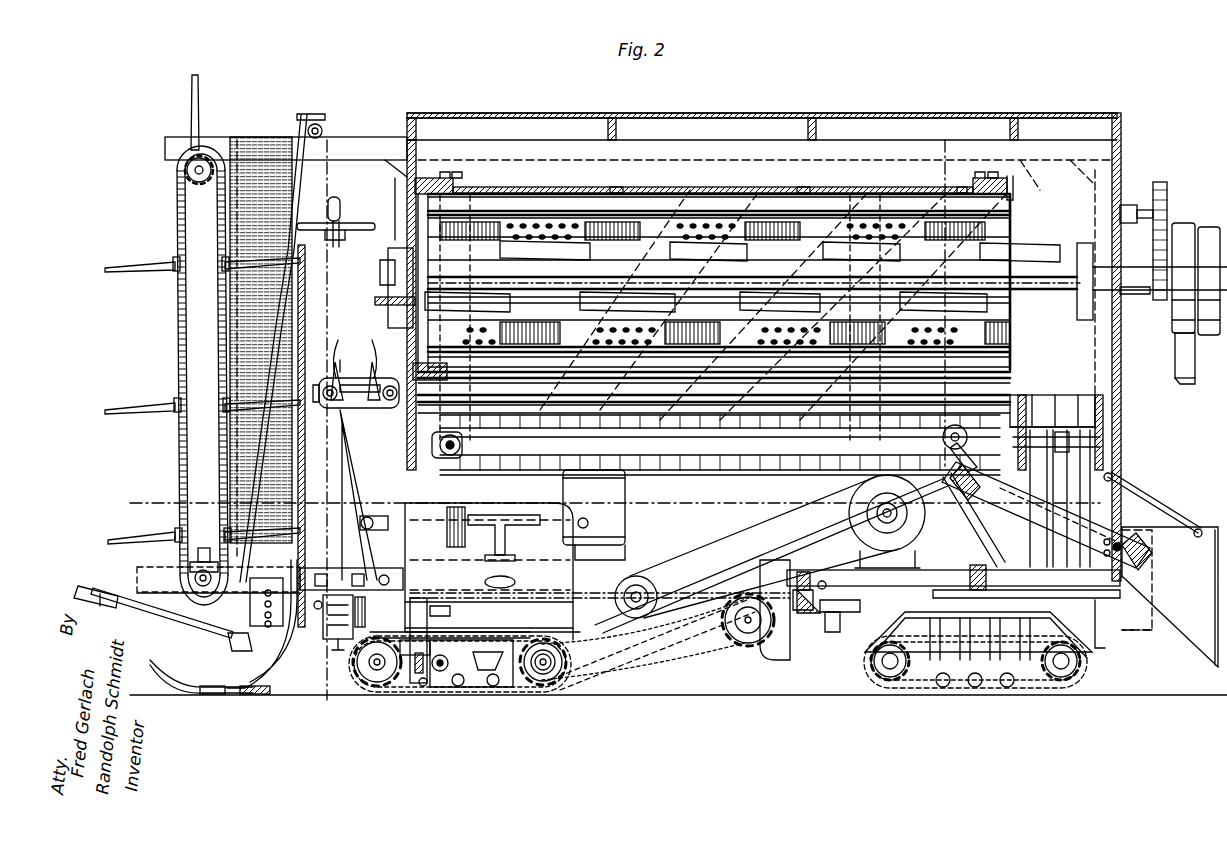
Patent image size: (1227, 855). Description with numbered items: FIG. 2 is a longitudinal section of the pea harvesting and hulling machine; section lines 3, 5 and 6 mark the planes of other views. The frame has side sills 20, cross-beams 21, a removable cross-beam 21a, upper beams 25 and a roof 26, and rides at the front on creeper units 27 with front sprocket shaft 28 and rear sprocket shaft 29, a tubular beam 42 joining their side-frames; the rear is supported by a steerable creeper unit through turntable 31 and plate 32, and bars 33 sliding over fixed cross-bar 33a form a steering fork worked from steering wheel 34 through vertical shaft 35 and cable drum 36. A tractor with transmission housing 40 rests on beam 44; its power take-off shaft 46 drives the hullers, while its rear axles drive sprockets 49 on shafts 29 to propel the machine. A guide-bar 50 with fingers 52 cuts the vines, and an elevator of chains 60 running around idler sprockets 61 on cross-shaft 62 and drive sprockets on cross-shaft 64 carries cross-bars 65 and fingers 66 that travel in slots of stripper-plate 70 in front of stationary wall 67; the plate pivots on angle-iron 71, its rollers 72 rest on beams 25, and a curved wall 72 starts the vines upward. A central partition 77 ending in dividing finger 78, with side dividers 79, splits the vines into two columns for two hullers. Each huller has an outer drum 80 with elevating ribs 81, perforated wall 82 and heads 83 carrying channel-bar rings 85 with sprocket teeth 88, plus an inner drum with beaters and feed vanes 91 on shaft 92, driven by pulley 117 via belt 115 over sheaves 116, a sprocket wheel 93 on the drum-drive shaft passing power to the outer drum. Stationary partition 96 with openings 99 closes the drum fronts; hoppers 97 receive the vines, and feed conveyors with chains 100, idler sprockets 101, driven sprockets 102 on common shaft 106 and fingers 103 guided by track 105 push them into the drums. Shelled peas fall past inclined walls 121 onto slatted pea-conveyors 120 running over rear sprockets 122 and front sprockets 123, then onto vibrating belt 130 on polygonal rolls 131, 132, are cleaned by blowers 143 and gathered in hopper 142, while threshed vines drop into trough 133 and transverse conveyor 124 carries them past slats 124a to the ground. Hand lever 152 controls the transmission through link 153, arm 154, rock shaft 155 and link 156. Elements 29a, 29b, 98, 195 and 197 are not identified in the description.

The section line 3— 3 is at (1156, 640).
The section line 5— 5 is at (343, 752).
The section line 6— 6 is at (826, 724).
The longitudinal beams or sills 20 is at (1026, 582).
The cross-beams 21 is at (960, 580).
The cross-beam 21a is at (470, 502).
The upper longitudinal beams or sills 25 is at (1040, 150).
The roof 26 is at (950, 118).
The creeper or caterpillar units 27 is at (410, 688).
The transverse shaft 28 is at (378, 662).
The transverse shaft 29 is at (555, 672).
The bracket 29a is at (470, 605).
The bracket 29b is at (418, 672).
The turntable 31 is at (1012, 598).
The plate 32 is at (1030, 612).
The bars 33 is at (860, 610).
The fixed cross-bar 33a is at (841, 627).
The steering wheel 34 is at (352, 224).
The vertical shaft 35 is at (345, 505).
The drum 36 is at (328, 625).
The transmission housing 40 is at (594, 517).
The tubular beam 42 is at (442, 673).
The beam 44 is at (815, 625).
The power take-off shaft 46 is at (748, 645).
The sprocket 49 is at (540, 680).
The guide-bar 50 is at (258, 697).
The forwardly projecting fingers 52 is at (210, 697).
The endless chains 60 is at (176, 470).
The idler sprockets 61 is at (190, 566).
The cross-shaft 62 is at (202, 583).
The cross-shaft 64 is at (190, 172).
The cross-bars 65 is at (173, 535).
The raking or carrying fingers 66 is at (143, 408).
The stationary vertical wall 67 is at (298, 485).
The stripper-plate 70 is at (258, 455).
The transverse angle-iron 71 is at (102, 612).
The curved wall 72 is at (270, 673).
The central partition 77 is at (242, 363).
The dividing finger 78 is at (230, 640).
The dividers 79 is at (200, 690).
The outer drum 80 is at (876, 195).
The longitudinal elevating bars or ribs 81 is at (528, 203).
The perforated peripheral wall 82 is at (578, 203).
The heads 83 is at (1010, 195).
The channel-bar rings 85 is at (975, 185).
The sprocket teeth 88 is at (990, 178).
The beaters and feed vanes 91 is at (504, 552).
The shaft 92 is at (390, 270).
The sprocket wheel 93 is at (1167, 195).
The stationary partition 96 is at (407, 196).
The hoppers 97 is at (770, 660).
The drive chain 98 is at (670, 668).
The openings 99 is at (1155, 256).
The endless chains 100 is at (398, 405).
The front idler sprockets 101 is at (332, 405).
The rear driven sprockets 102 is at (385, 405).
The fingers 103 is at (342, 378).
The track 105 is at (345, 402).
The common shaft 106 is at (374, 378).
The belt 115 is at (1190, 376).
The sheaves 116 is at (1195, 350).
The pulley 117 is at (1187, 222).
The slatted endless pea-conveyor 120 is at (840, 428).
The inclined fixed walls 121 is at (1090, 480).
The rear drive sprockets 122 is at (968, 440).
The front sprockets 123 is at (462, 446).
The transverse endless conveyor 124 is at (1095, 442).
The slats 124a is at (1098, 630).
The inclined endless conveyor belt 130 is at (1075, 530).
The polygonal roll 131 is at (960, 520).
The polygonal roll 132 is at (1150, 562).
The transverse trough 133 is at (965, 492).
The hopper or container 142 is at (1170, 597).
The blowers 143 is at (850, 506).
The hand lever 152 is at (362, 518).
The link 153 is at (470, 510).
The arm 154 is at (490, 555).
The rock shaft 155 is at (515, 620).
The link 156 is at (675, 630).
The belt pulley 195 is at (645, 585).
The connecting rod 197 is at (740, 555).